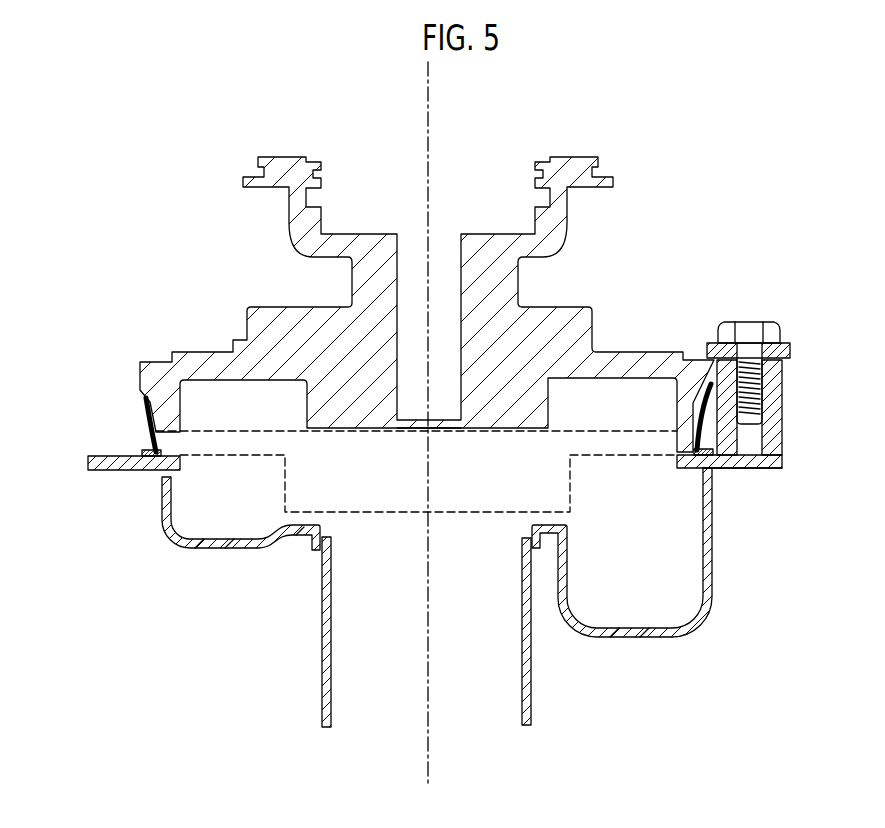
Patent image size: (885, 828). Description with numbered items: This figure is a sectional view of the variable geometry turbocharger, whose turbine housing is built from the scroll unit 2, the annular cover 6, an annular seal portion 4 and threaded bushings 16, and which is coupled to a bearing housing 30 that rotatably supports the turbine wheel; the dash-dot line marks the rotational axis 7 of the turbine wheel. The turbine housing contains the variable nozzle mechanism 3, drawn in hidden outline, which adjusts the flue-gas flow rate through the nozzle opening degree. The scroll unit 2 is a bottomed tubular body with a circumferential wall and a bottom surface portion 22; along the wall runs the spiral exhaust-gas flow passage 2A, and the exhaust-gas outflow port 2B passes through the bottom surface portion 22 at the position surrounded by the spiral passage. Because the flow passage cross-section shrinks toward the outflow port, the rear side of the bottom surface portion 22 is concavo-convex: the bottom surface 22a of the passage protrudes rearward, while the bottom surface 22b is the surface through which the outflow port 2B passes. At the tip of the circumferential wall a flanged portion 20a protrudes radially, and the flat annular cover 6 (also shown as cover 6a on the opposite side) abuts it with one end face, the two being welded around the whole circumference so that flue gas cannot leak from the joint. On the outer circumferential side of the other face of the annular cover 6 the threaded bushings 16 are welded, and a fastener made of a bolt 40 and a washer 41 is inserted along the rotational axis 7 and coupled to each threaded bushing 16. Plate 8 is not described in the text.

The scroll unit 2 is at (730, 586).
The exhaust-gas flow passage 2A is at (239, 501).
The exhaust-gas outflow port 2B is at (394, 679).
The variable nozzle mechanism 3 is at (382, 514).
The annular seal portion 4 is at (700, 436).
The annular cover 6 is at (784, 462).
The annular cover 6a is at (88, 458).
The rotational axis 7 is at (426, 773).
The partition plate 8 is at (533, 657).
The threaded bushing 16 is at (782, 406).
The flanged portion 20a is at (772, 472).
The bottom surface portion 22 is at (307, 644).
The bottom surface 22a is at (215, 550).
The bottom surface 22b is at (302, 538).
The bearing housing 30 is at (572, 156).
The bolt 40 is at (750, 321).
The washer 41 is at (793, 349).